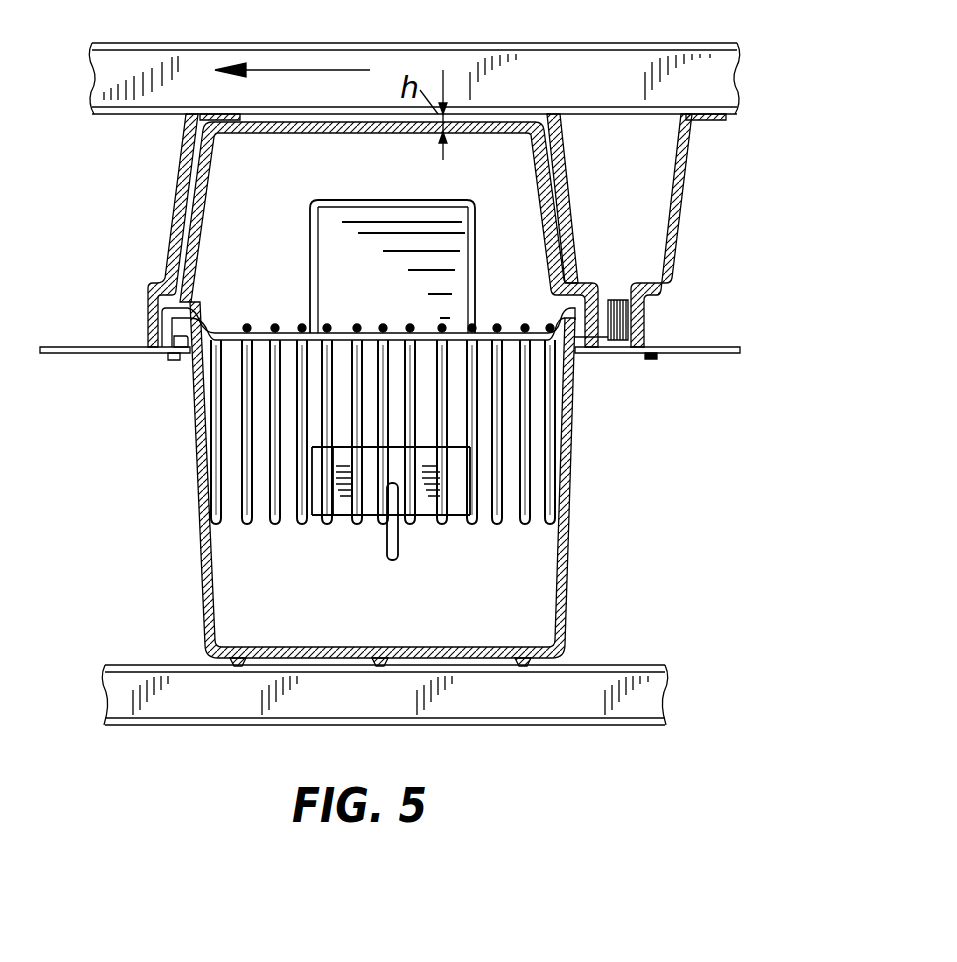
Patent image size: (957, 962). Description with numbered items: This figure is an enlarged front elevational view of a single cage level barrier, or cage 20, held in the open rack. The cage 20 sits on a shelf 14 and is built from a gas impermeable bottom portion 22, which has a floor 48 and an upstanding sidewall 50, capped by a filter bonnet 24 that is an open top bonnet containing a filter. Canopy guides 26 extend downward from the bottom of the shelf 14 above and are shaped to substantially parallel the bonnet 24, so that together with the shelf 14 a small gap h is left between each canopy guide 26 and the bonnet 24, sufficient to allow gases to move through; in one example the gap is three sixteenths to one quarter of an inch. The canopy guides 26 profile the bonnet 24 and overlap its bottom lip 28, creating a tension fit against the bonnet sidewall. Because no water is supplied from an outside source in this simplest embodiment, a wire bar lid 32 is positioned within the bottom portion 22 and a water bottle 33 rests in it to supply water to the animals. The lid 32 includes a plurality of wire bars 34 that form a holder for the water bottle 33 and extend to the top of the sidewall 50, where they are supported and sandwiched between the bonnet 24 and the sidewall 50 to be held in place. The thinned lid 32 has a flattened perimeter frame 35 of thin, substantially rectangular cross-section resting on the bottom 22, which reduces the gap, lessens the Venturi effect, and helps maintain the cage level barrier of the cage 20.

The shelf 14 is at (664, 60).
The cage level barrier (cage) 20 is at (376, 464).
The bottom portion 22 is at (207, 597).
The filter bonnet 24 is at (553, 150).
The canopy guide 26 is at (182, 215).
The lip 28 is at (148, 310).
The wire bar lid 32 is at (302, 526).
The water bottle 33 is at (500, 204).
The wire bars 34 is at (252, 526).
The flattened perimeter frame 35 is at (203, 313).
The floor 48 is at (510, 650).
The sidewall 50 is at (576, 444).